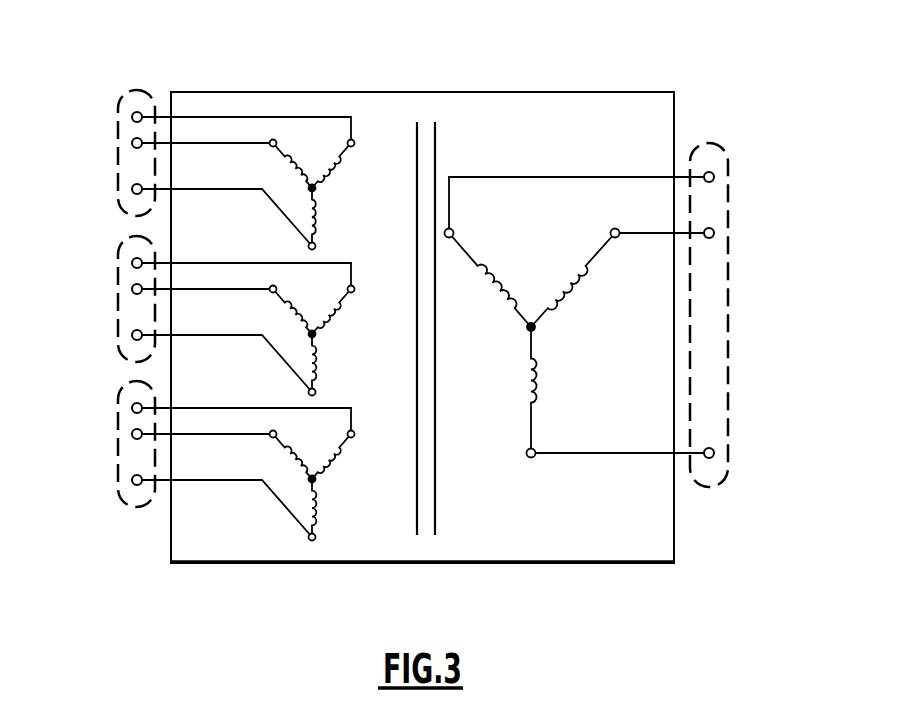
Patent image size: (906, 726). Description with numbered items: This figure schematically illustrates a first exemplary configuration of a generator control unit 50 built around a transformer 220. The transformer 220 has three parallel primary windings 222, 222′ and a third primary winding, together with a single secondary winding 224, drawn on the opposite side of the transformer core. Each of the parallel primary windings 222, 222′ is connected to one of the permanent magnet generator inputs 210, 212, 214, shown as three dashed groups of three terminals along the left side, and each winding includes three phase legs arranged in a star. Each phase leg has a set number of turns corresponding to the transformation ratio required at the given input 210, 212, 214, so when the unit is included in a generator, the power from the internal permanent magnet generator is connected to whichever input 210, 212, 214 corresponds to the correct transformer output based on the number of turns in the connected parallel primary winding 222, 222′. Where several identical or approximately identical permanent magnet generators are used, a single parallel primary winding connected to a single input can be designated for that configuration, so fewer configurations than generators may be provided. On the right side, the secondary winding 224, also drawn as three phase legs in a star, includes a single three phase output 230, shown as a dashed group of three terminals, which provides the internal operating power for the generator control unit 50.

The generator control unit 50 is at (297, 584).
The permanent magnet generator input 210 is at (116, 127).
The permanent magnet generator input 212 is at (116, 273).
The permanent magnet generator input 214 is at (116, 418).
The transformer 220 is at (670, 68).
The parallel primary winding 222 is at (301, 117).
The parallel primary winding 222′ is at (337, 262).
The secondary winding 224 is at (500, 403).
The three phase output 230 is at (729, 275).